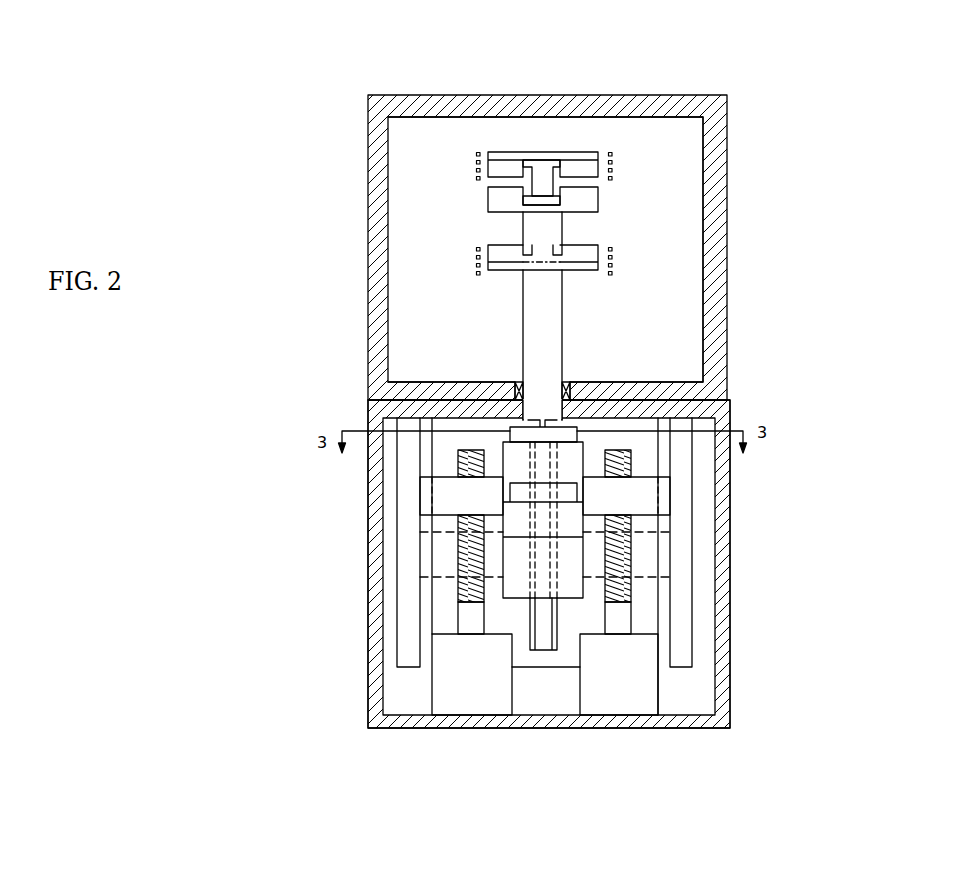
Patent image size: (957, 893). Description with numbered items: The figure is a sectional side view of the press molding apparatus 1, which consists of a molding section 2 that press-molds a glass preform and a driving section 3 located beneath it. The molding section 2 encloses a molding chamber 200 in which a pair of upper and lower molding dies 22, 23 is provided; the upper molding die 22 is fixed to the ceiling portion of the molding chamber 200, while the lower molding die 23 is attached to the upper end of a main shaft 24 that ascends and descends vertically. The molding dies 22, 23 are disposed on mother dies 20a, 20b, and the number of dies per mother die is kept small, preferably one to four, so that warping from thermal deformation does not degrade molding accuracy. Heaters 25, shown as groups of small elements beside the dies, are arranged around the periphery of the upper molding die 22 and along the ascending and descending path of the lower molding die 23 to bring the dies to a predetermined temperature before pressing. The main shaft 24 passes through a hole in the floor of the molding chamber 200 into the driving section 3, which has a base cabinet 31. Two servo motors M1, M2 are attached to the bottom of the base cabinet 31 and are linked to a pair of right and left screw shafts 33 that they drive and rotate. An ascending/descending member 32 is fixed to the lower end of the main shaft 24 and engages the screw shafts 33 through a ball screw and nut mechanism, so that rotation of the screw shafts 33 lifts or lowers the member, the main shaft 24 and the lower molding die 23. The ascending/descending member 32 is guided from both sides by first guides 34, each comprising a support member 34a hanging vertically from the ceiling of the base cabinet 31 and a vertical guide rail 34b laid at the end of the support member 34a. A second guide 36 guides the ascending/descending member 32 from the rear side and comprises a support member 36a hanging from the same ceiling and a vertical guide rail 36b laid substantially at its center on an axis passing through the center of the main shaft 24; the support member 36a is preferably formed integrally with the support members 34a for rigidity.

The press molding apparatus 1 is at (278, 216).
The molding section 2 is at (737, 216).
The molding chamber 200 is at (452, 112).
The mother die 20a is at (577, 165).
The mother die 20b is at (598, 210).
The upper molding die 22 is at (542, 173).
The lower molding die 23 is at (587, 197).
The heaters 25 is at (477, 250).
The main shaft 24 is at (530, 313).
The driving section 3 is at (739, 415).
The base cabinet 31 is at (730, 637).
The ascending/descending member 32 is at (440, 548).
The screw shaft 33 is at (457, 558).
The first guide 34 is at (469, 566).
The support member 34a is at (455, 494).
The guide rail 34b is at (427, 617).
The servo motor M1 is at (447, 688).
The servo motor M2 is at (640, 692).
The second guide 36 is at (511, 622).
The support member 36a is at (537, 665).
The guide rail 36b is at (550, 635).